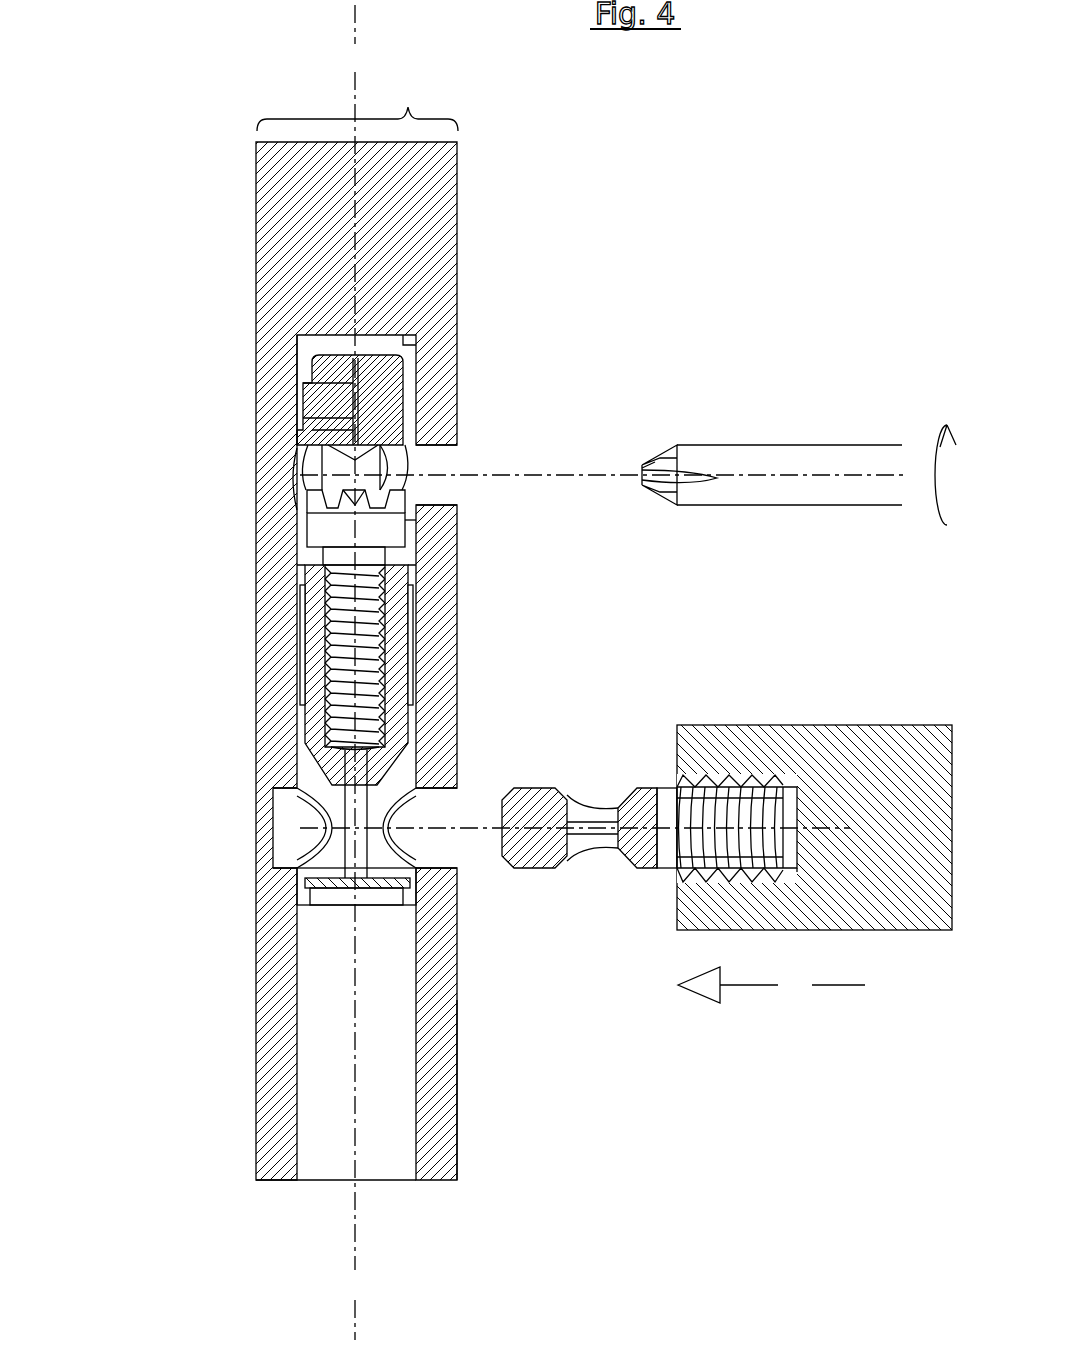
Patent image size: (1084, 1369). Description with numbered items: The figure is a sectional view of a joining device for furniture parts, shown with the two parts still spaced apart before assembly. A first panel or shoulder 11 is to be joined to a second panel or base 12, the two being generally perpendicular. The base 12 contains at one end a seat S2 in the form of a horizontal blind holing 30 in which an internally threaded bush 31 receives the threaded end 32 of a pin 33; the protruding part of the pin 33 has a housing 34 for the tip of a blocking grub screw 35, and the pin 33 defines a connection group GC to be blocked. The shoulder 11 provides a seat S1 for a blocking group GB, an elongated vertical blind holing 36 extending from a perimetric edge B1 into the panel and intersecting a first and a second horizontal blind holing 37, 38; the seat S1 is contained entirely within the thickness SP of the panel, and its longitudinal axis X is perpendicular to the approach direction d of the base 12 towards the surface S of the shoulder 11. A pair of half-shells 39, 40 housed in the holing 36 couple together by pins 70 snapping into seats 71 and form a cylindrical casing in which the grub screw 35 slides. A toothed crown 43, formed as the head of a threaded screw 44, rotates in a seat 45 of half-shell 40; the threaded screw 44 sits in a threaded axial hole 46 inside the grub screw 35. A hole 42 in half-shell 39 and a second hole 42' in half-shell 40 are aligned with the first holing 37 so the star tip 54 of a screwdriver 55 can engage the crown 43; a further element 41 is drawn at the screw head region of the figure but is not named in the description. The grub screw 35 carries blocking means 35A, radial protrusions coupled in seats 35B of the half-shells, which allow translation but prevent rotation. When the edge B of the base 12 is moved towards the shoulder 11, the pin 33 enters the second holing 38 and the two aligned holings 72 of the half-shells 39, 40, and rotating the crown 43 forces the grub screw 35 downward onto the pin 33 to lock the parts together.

The shoulder 11 is at (328, 219).
The base 12 is at (922, 789).
The horizontal blind holing 30 is at (793, 790).
The internally threaded bush 31 is at (742, 790).
The threaded end 32 is at (698, 790).
The pin 33 is at (661, 886).
The housing 34 is at (577, 805).
The blocking grub screw 35 is at (390, 757).
The blocking means against rotation 35A is at (302, 570).
The seats 35B is at (307, 620).
The vertical blind holing 36 is at (410, 357).
The first horizontal blind holing 37 is at (445, 497).
The second horizontal blind holing 38 is at (460, 850).
The first half-shell 39 is at (405, 555).
The second half-shell 40 is at (302, 545).
The ball portion 41 is at (407, 463).
The hole 42 is at (460, 446).
The second hole 42' is at (186, 448).
The toothed crown 43 is at (300, 510).
The threaded screw 44 is at (330, 640).
The seat 45 is at (407, 525).
The threaded axial hole 46 is at (310, 755).
The star tip 54 is at (658, 455).
The screwdriver 55 is at (822, 485).
The pins 70 is at (300, 407).
The seats 71 is at (303, 395).
The aligned holings 72 is at (310, 843).
The edge B is at (668, 780).
The perimetric edge B1 is at (275, 1182).
The blocking group GB is at (342, 919).
The connection group GC is at (589, 880).
The surface S is at (458, 1095).
The seat S1 is at (303, 348).
The seat S2 is at (790, 872).
The thickness SP is at (357, 101).
The longitudinal axis X is at (356, 672).
The approach direction d is at (771, 985).